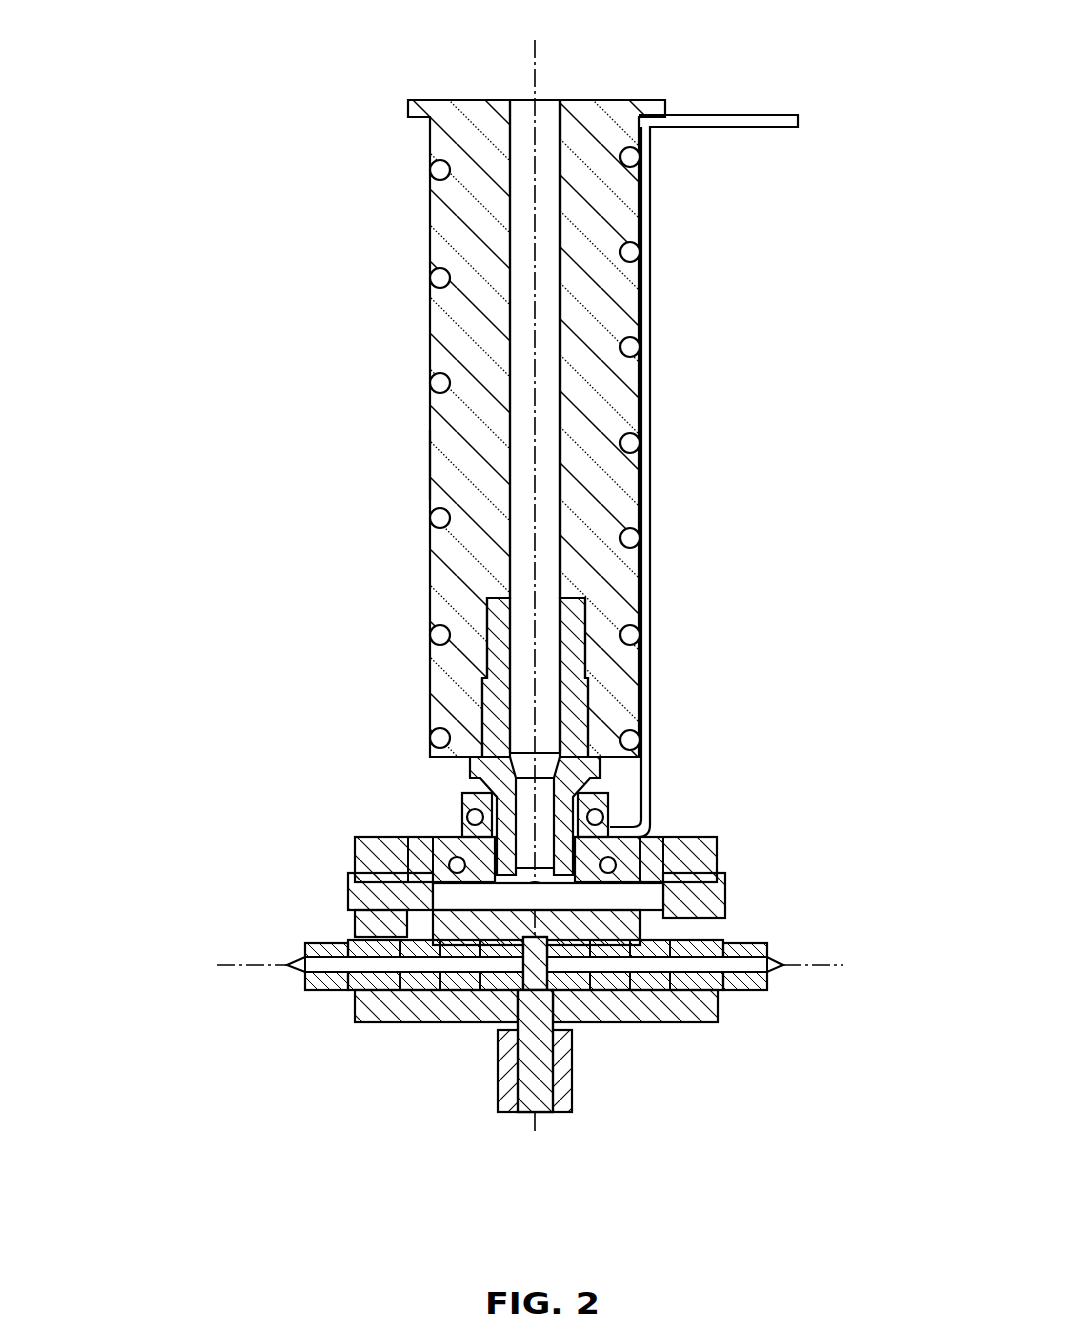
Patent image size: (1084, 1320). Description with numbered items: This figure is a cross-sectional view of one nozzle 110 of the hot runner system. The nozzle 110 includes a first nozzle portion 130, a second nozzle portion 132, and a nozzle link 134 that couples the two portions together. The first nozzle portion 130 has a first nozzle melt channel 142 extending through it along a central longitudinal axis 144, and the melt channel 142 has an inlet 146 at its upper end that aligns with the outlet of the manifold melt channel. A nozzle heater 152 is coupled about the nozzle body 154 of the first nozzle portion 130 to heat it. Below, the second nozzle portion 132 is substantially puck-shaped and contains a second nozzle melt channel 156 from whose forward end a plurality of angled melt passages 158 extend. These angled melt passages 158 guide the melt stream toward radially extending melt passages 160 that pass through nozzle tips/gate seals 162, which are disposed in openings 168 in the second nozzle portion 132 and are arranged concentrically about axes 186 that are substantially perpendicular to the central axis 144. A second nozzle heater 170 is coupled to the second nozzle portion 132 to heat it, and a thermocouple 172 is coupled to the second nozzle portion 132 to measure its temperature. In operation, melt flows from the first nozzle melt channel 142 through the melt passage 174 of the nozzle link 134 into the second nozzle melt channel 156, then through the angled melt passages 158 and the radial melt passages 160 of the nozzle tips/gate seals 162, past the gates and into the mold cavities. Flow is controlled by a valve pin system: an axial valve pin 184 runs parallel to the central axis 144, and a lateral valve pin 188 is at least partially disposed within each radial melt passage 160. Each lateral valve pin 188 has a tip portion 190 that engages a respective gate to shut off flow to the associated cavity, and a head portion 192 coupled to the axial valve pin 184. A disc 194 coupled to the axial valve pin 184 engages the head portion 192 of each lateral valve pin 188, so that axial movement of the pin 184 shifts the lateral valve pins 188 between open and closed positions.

The nozzle 110 is at (778, 503).
The first nozzle portion 130 is at (445, 560).
The second nozzle portion 132 is at (720, 862).
The nozzle link 134 is at (468, 778).
The first nozzle melt channel 142 is at (548, 365).
The central longitudinal axis 144 is at (535, 72).
The inlet 146 is at (547, 97).
The nozzle heater 152 is at (437, 276).
The nozzle body 154 is at (437, 465).
The second nozzle melt channel 156 is at (602, 855).
The angled melt passages 158 is at (608, 893).
The radially extending melt passages 160 is at (333, 990).
The nozzle tips/gate seals 162 is at (407, 1007).
The openings 168 is at (348, 910).
The nozzle heater 170 is at (462, 795).
The thermocouple 172 is at (740, 115).
The melt passage 174 is at (548, 657).
The axial valve pin 184 is at (543, 1110).
The axes 186 is at (225, 963).
The lateral valve pin 188 is at (440, 1025).
The tip portion 190 is at (292, 970).
The head portion 192 is at (457, 1023).
The disc 194 is at (573, 1030).